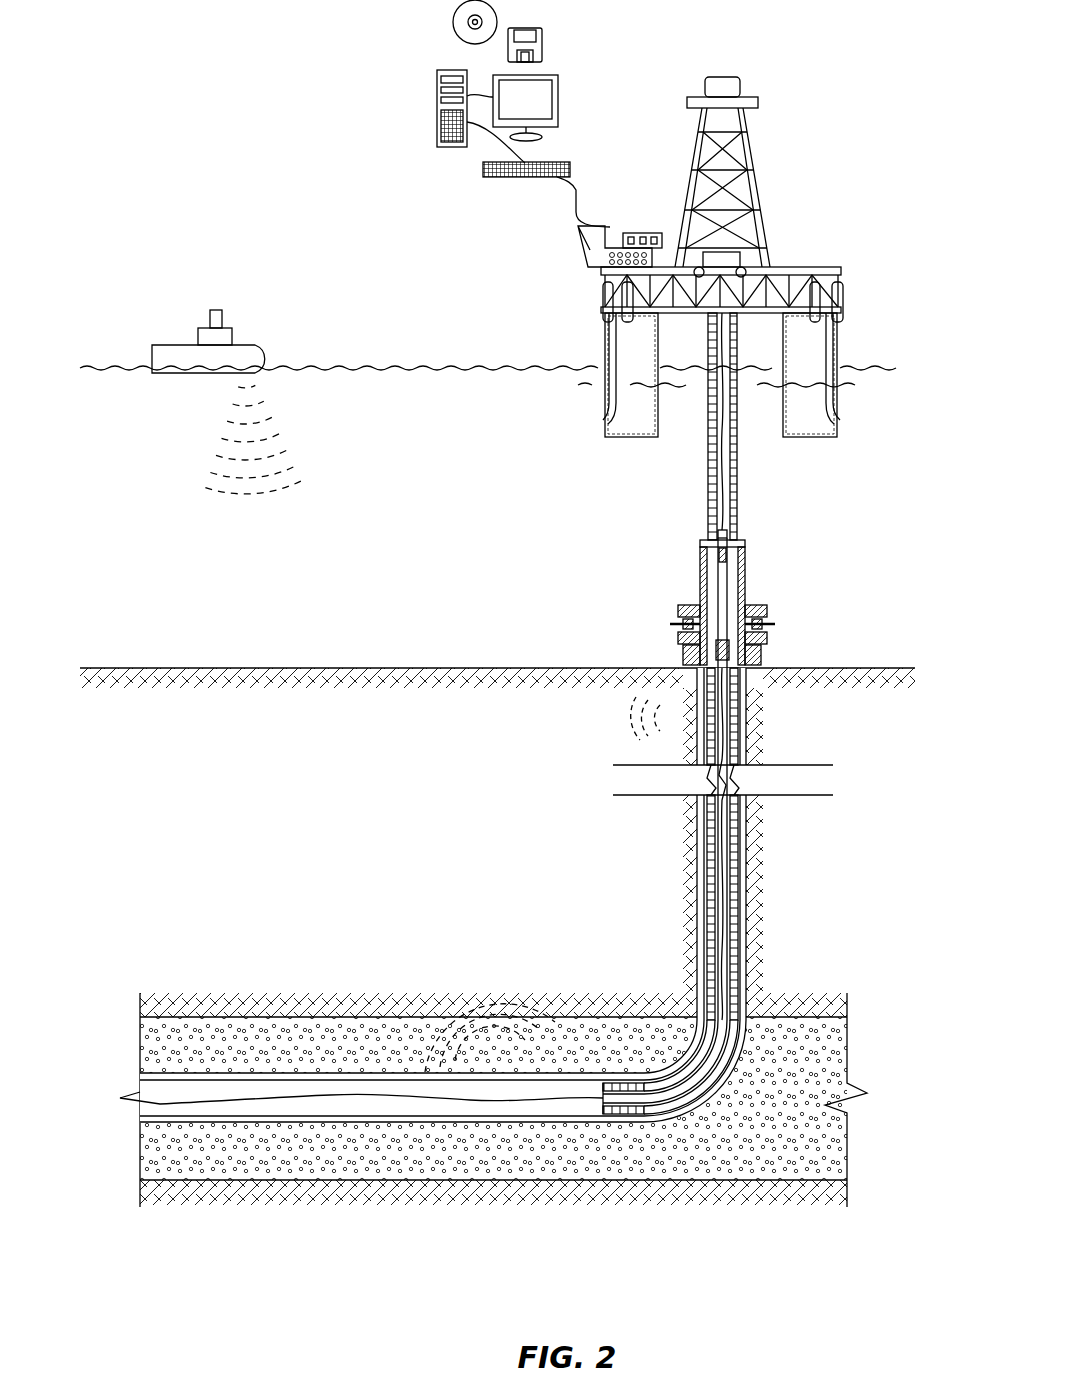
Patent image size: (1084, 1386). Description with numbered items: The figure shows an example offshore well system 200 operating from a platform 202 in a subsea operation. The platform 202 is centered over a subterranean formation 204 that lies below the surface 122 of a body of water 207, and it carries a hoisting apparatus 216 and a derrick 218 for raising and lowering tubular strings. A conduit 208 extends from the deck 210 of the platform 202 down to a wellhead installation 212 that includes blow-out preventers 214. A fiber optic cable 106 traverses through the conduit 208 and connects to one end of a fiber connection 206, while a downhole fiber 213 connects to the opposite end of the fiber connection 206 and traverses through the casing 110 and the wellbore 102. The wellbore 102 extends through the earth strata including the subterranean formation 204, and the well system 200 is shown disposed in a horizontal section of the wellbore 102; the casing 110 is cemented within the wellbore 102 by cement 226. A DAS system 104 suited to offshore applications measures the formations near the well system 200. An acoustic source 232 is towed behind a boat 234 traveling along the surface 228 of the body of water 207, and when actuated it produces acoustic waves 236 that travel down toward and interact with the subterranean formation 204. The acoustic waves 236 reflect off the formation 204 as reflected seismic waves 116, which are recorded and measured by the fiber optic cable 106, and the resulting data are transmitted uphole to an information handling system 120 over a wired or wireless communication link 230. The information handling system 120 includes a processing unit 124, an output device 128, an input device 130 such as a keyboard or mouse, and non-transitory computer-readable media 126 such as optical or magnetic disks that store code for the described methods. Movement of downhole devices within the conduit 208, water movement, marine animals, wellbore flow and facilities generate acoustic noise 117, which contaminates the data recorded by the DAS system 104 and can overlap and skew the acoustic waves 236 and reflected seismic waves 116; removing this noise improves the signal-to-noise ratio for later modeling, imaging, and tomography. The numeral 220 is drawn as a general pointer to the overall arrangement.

The wellbore 102 is at (750, 845).
The DAS system 104 is at (482, 1198).
The fiber optic cable 106 is at (740, 470).
The casing 110 is at (718, 853).
The reflected seismic waves 116 is at (480, 1023).
The acoustic noise 117 is at (607, 718).
The information handling system 120 is at (430, 175).
The surface 122 is at (196, 670).
The processing unit 124 is at (437, 105).
The non-transitory computer-readable media 126 is at (454, 28).
The output device 128 is at (558, 105).
The input device 130 is at (513, 178).
The well system 200 is at (578, 773).
The platform 202 is at (840, 270).
The subterranean formation 204 is at (842, 1038).
The fiber connection 206 is at (715, 540).
The body of water 207 is at (378, 516).
The conduit 208 is at (706, 476).
The deck 210 is at (803, 305).
The wellhead installation 212 is at (676, 610).
The downhole fiber 213 is at (553, 1102).
The blow-out preventers 214 is at (768, 622).
The hoisting apparatus 216 is at (722, 252).
The derrick 218 is at (750, 140).
The well system 220 is at (815, 475).
The cement 226 is at (748, 880).
The surface 228 is at (328, 368).
The communication link 230 is at (576, 195).
The acoustic source 232 is at (178, 374).
The boat 234 is at (176, 345).
The acoustic waves 236 is at (200, 492).